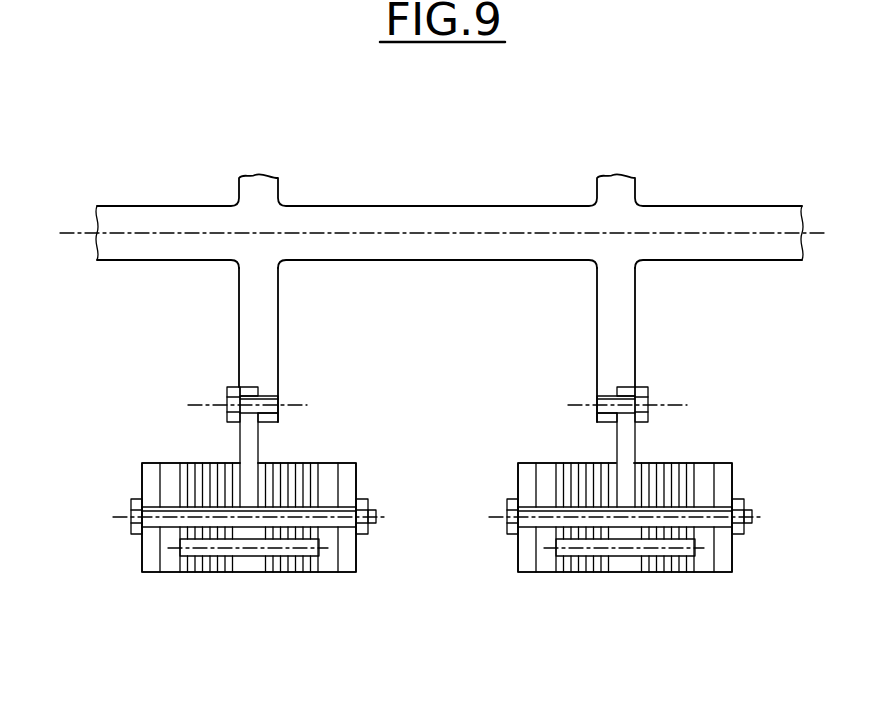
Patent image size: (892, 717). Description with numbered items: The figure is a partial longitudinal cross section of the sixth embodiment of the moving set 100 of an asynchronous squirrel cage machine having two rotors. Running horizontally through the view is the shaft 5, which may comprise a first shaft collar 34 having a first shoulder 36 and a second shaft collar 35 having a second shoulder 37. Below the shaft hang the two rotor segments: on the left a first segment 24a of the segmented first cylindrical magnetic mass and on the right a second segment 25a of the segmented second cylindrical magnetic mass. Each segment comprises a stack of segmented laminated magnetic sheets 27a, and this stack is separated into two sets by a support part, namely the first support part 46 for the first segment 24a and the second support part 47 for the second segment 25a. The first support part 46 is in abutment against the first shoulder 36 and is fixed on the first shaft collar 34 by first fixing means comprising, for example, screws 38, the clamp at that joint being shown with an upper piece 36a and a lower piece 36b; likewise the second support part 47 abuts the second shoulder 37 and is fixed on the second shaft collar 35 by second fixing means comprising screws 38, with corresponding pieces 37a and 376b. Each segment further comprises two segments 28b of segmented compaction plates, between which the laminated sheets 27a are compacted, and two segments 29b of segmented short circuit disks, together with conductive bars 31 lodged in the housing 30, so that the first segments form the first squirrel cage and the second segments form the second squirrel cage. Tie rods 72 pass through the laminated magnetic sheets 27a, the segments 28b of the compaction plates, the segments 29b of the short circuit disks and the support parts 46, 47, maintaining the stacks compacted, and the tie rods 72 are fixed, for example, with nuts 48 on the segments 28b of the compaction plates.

The moving set 100 is at (713, 160).
The shaft 5 is at (332, 214).
The first shaft collar 34 is at (289, 300).
The second shaft collar 35 is at (626, 300).
The first shoulder 36 is at (214, 376).
The upper clamp piece 36a is at (249, 387).
The lower clamp piece 36b is at (262, 395).
The second shoulder 37 is at (659, 376).
The upper clamp piece 37a is at (626, 387).
The lower clamp piece 376b is at (613, 395).
The screws 38 is at (286, 414).
The first support part 46 is at (245, 443).
The second support part 47 is at (630, 443).
The tie rods 72 is at (348, 505).
The nuts 48 is at (131, 505).
The conductive bars 31 is at (180, 542).
The segments of segmented compaction plates 28b is at (148, 565).
The segments of segmented short circuit disks 29b is at (173, 565).
The segmented laminated magnetic sheets 27a is at (225, 565).
The housing 30 is at (272, 565).
The first segment 24a is at (198, 639).
The second segment 25a is at (574, 639).